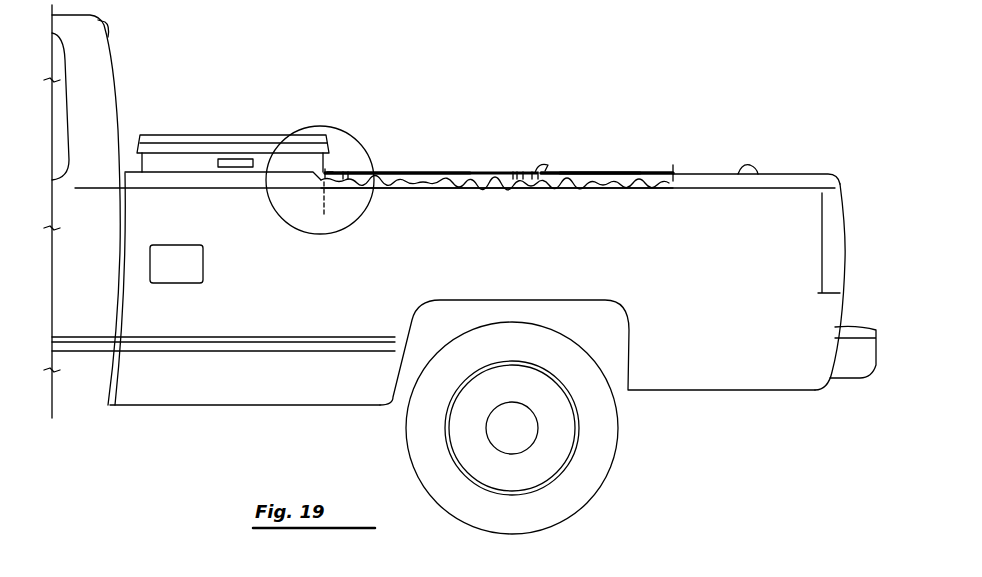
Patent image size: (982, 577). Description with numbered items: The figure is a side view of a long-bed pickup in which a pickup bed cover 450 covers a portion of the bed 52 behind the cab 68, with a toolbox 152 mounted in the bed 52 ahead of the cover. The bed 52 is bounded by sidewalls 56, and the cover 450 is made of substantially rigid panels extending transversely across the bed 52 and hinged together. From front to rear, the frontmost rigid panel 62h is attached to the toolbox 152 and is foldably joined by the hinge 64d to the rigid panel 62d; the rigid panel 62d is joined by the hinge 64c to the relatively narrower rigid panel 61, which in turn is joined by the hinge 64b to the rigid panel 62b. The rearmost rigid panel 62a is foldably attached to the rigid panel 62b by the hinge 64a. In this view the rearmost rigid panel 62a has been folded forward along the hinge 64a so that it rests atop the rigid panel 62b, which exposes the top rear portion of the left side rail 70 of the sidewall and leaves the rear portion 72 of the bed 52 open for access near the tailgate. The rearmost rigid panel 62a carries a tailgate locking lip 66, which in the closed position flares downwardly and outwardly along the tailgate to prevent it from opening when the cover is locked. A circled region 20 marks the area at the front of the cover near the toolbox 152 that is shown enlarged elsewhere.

The cab 68 is at (112, 78).
The toolbox 152 is at (177, 134).
The detail region 20 is at (319, 180).
The rigid panel 62h is at (337, 170).
The hinge 64d is at (345, 170).
The rigid panel 62d is at (473, 170).
The pickup bed cover 450 is at (538, 72).
The hinge 64c is at (513, 170).
The relatively narrower rigid panel 61 is at (524, 170).
The hinge 64b is at (542, 163).
The rearmost rigid panel 62a is at (630, 170).
The hinge 64a is at (675, 172).
The left side rail 70 is at (800, 173).
The bed 52 is at (846, 206).
The rear portion 72 is at (744, 170).
The rigid panel 62b is at (603, 180).
The tailgate locking lip 66 is at (549, 170).
The sidewalls 56 is at (598, 253).